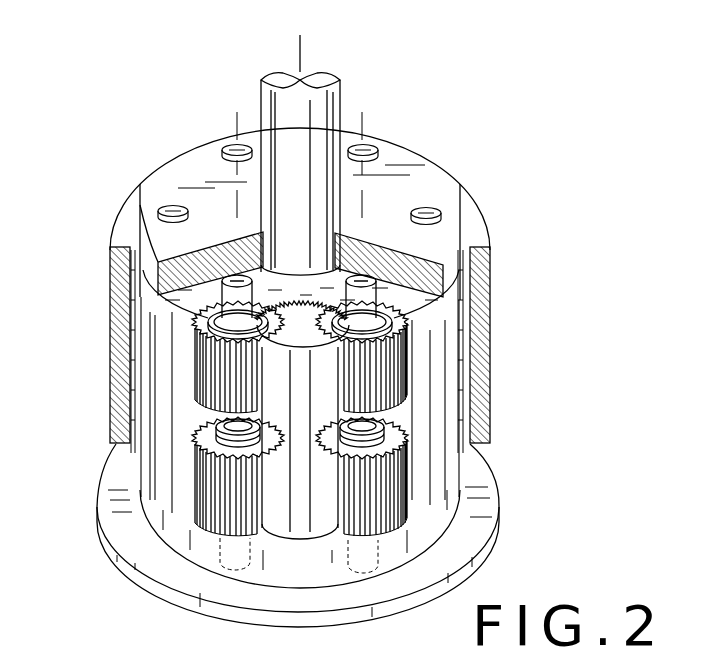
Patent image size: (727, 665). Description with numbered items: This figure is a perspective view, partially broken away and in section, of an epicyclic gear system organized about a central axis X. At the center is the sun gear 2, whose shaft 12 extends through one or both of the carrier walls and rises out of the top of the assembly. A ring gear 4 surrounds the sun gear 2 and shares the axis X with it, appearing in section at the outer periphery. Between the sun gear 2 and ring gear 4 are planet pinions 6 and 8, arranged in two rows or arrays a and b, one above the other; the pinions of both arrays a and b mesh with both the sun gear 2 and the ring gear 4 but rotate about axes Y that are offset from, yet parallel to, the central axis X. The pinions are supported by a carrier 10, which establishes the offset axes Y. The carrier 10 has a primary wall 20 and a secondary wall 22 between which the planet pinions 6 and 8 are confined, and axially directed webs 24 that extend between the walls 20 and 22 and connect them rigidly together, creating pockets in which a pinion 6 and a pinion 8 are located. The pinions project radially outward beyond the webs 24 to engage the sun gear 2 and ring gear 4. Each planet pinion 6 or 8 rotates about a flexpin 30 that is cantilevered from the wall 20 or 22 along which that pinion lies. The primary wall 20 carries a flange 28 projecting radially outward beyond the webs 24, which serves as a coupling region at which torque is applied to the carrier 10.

The central axis X is at (299, 38).
The offset axes Y is at (301, 143).
The shaft 12 is at (334, 148).
The carrier 10 is at (176, 166).
The secondary wall 22 is at (410, 187).
The ring gear 4 is at (483, 286).
The flexpin 30 is at (110, 283).
The webs 24 is at (167, 415).
The sun gear 2 is at (294, 295).
The planet pinion 8 is at (210, 367).
The array b is at (418, 347).
The planet pinion 6 is at (200, 484).
The array a is at (418, 452).
The primary wall 20 is at (170, 549).
The flange 28 is at (490, 497).